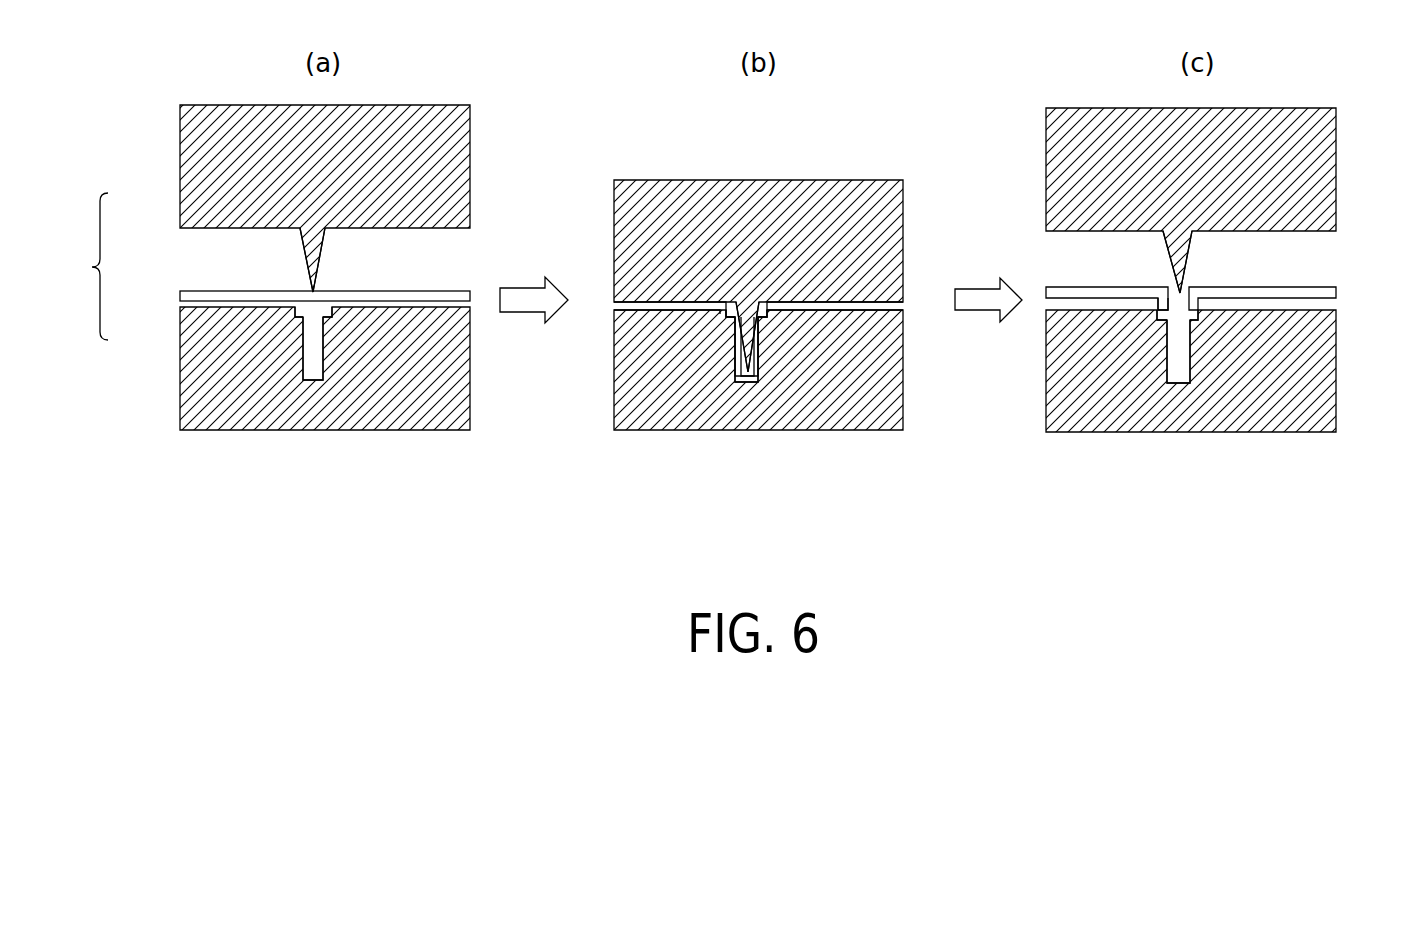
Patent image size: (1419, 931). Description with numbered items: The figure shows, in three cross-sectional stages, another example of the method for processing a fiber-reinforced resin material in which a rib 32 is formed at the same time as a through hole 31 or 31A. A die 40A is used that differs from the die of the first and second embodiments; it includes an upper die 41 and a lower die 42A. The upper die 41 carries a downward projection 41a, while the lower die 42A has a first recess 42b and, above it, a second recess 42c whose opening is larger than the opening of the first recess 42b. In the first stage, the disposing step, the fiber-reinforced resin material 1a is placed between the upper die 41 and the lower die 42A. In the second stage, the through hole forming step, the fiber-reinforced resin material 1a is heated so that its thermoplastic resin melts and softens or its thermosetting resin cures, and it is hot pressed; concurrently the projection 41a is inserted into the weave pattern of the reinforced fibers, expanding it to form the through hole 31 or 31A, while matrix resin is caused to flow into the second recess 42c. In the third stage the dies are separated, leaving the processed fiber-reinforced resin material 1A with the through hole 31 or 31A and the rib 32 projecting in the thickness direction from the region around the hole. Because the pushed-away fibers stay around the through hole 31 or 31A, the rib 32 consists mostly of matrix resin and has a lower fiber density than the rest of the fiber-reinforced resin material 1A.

The die 40A is at (70, 266).
The upper die 41 is at (180, 208).
The projection 41a is at (322, 236).
The lower die 42A is at (180, 319).
The first recess 42b is at (302, 378).
The second recess 42c is at (318, 311).
The fiber-reinforced resin material 1a is at (470, 296).
The fiber-reinforced resin material 1A is at (1225, 368).
The through hole 31 is at (1172, 285).
The through hole 31A is at (1210, 282).
The rib 32 is at (1169, 304).